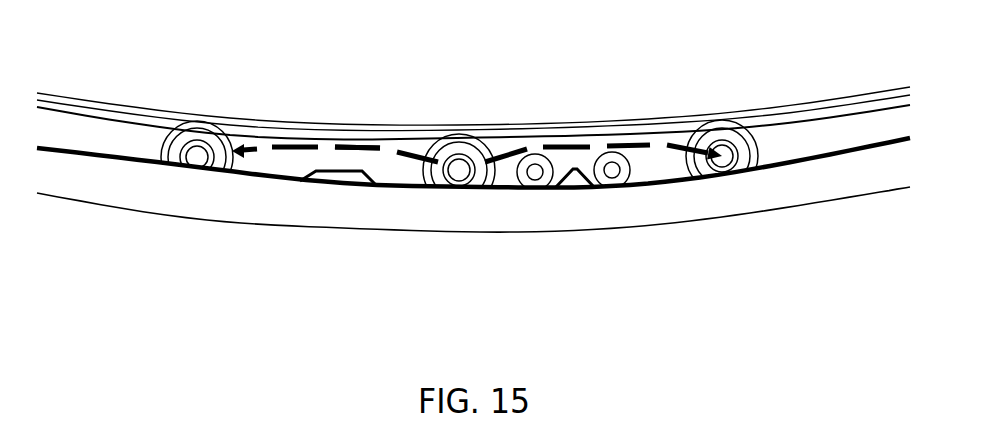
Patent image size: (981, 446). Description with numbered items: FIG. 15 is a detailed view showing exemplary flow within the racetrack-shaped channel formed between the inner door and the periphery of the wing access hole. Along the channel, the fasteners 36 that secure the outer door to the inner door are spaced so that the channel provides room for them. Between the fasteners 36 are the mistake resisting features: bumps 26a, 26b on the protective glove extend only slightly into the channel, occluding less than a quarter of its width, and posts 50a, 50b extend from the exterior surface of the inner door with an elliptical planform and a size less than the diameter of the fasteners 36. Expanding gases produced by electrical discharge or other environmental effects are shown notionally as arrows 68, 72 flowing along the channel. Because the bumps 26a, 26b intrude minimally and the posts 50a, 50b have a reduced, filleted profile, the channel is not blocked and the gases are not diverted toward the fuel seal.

The fastener 36 is at (198, 160).
The bump 26a is at (344, 183).
The bump 26b is at (575, 172).
The post 50a is at (537, 176).
The post 50b is at (614, 175).
The arrow 68 is at (560, 146).
The arrow 72 is at (347, 146).